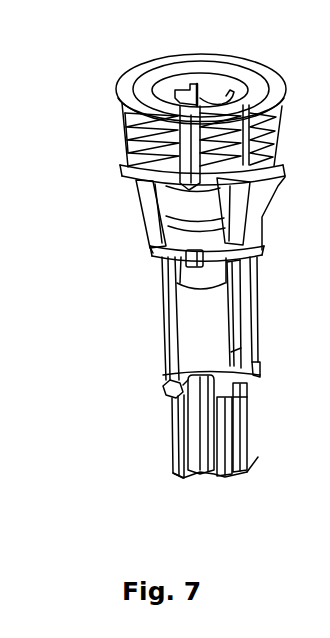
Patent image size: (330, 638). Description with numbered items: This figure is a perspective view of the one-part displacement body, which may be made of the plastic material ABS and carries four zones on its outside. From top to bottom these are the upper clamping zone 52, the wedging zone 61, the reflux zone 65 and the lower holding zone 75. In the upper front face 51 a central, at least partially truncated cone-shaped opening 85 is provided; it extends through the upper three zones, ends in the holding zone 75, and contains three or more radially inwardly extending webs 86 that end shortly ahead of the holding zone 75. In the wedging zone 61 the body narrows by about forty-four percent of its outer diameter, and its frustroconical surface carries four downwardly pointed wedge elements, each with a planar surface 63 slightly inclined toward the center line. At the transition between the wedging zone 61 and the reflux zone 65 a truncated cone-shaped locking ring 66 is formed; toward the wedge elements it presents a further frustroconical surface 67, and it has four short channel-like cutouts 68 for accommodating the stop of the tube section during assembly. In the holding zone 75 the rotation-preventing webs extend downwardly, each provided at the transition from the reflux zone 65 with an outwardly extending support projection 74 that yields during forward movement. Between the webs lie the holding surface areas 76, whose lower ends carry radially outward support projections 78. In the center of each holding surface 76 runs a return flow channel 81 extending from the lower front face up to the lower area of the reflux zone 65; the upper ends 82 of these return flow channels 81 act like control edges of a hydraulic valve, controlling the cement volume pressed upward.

The upper front face 51 is at (147, 95).
The upper clamping zone 52 is at (118, 128).
The wedging zone 61 is at (134, 212).
The planar surface 63 is at (147, 200).
The reflux zone 65 is at (158, 322).
The locking ring 66 is at (180, 273).
The frustroconical surface 67 is at (150, 247).
The channel-like cutouts 68 is at (192, 258).
The support projection 74 is at (164, 392).
The holding zone 75 is at (205, 417).
The holding surface areas 76 is at (223, 448).
The support projections 78 is at (185, 477).
The return flow channel 81 is at (165, 433).
The upper ends of the return flow channels 82 is at (167, 372).
The central opening 85 is at (185, 93).
The radially inwardly extending webs 86 is at (213, 93).